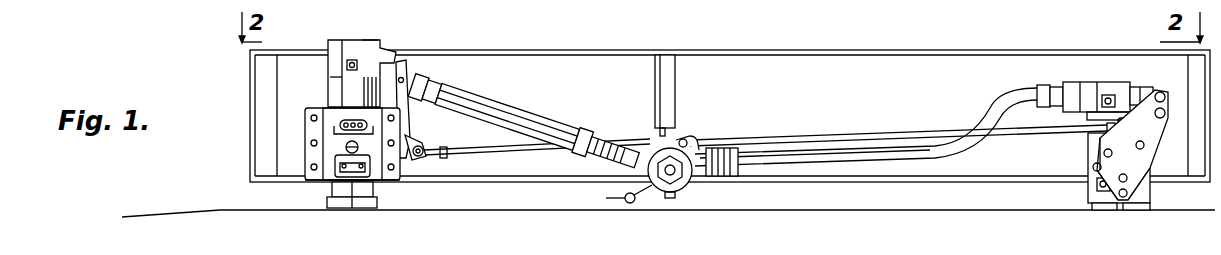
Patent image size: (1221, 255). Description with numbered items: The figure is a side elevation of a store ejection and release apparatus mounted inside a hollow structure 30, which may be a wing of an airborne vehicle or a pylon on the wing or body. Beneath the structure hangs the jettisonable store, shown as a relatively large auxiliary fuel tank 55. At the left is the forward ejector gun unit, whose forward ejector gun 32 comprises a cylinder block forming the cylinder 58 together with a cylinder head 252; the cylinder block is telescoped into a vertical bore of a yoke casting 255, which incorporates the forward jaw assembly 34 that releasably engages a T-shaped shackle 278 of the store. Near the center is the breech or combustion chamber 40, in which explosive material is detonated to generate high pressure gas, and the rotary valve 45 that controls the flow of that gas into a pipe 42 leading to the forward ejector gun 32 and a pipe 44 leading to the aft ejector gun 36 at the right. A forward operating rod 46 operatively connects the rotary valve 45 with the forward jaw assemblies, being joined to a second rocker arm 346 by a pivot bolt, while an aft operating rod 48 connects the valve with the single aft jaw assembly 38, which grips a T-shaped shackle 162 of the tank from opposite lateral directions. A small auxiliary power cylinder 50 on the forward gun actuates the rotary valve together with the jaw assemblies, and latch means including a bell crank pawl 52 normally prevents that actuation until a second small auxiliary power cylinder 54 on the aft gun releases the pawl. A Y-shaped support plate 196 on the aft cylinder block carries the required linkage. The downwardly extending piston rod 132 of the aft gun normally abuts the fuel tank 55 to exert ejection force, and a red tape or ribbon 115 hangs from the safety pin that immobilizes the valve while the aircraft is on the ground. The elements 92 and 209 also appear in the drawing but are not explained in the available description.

The hollow structure 30 is at (768, 50).
The forward ejector gun 32 is at (332, 42).
The jaw assembly 34 is at (318, 184).
The aft ejector gun 36 is at (1088, 150).
The aft jaw assembly 38 is at (1152, 193).
The combustion chamber 40 is at (667, 198).
The pipe 42 is at (485, 99).
The pipe 44 is at (993, 94).
The rotary valve 45 is at (701, 176).
The forward operating rod 46 is at (470, 147).
The aft operating rod 48 is at (997, 136).
The auxiliary power cylinder 50 is at (407, 98).
The bell crank pawl 52 is at (1172, 84).
The auxiliary power cylinder 54 is at (1137, 85).
The auxiliary fuel tank 55 is at (162, 216).
The cylinder 58 is at (329, 78).
The post 92 is at (668, 155).
The red tape or ribbon 115 is at (608, 205).
The piston rod 132 is at (1104, 210).
The T-shaped shackle 162 is at (1135, 210).
The Y-shaped support plate 196 is at (1155, 138).
The link 209 is at (1095, 165).
The cylinder head 252 is at (372, 39).
The yoke casting 255 is at (306, 114).
The T-shaped shackle 278 is at (357, 209).
The second rocker arm 346 is at (407, 160).